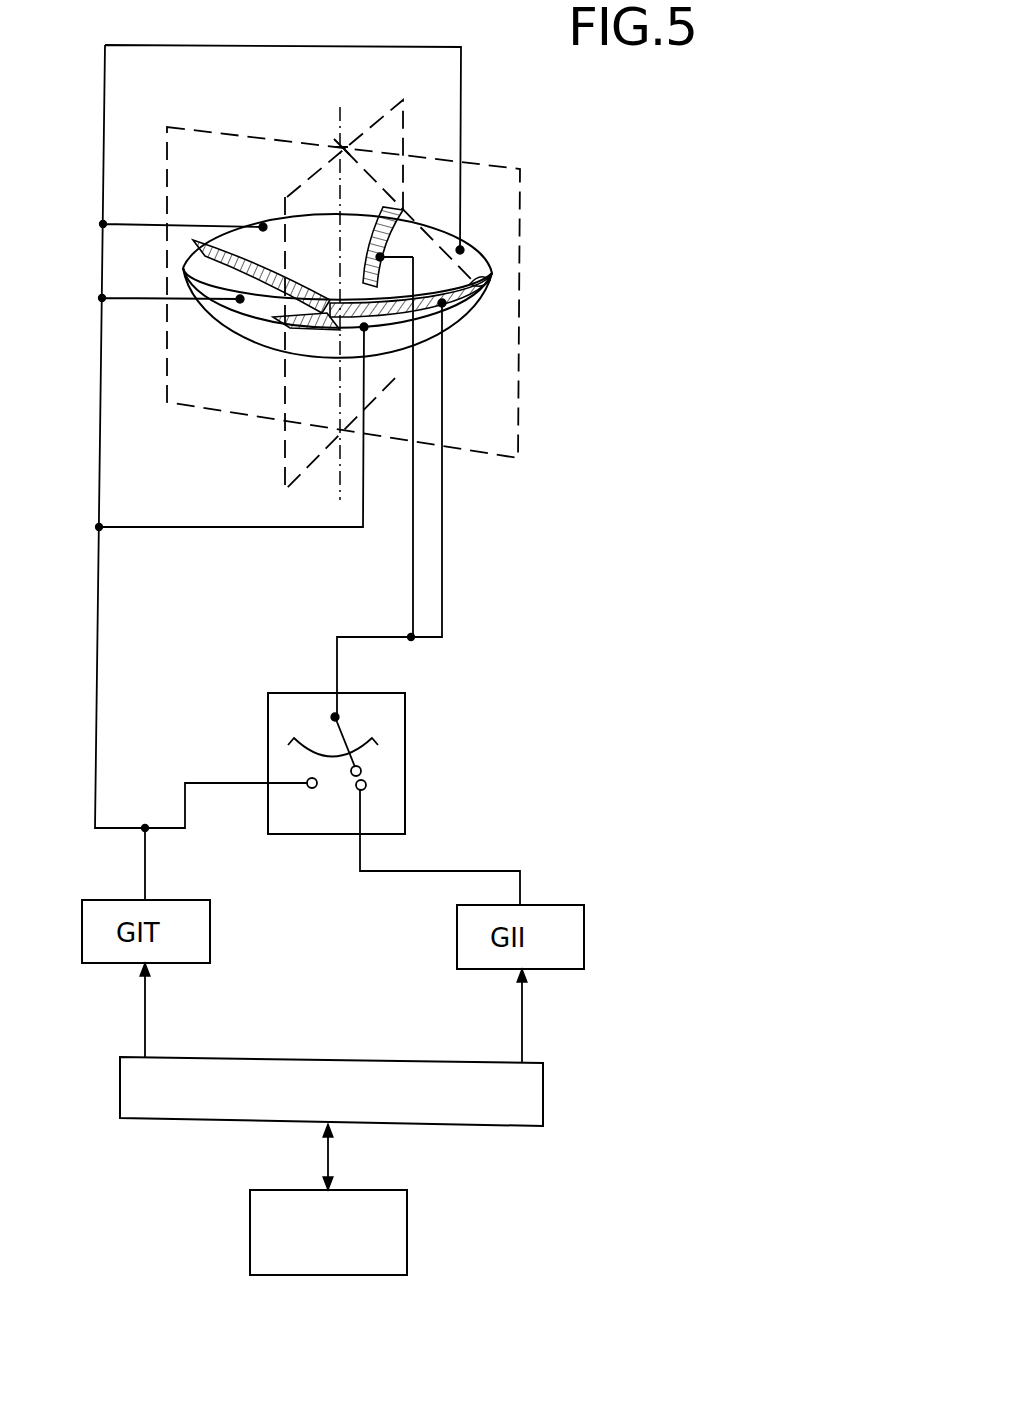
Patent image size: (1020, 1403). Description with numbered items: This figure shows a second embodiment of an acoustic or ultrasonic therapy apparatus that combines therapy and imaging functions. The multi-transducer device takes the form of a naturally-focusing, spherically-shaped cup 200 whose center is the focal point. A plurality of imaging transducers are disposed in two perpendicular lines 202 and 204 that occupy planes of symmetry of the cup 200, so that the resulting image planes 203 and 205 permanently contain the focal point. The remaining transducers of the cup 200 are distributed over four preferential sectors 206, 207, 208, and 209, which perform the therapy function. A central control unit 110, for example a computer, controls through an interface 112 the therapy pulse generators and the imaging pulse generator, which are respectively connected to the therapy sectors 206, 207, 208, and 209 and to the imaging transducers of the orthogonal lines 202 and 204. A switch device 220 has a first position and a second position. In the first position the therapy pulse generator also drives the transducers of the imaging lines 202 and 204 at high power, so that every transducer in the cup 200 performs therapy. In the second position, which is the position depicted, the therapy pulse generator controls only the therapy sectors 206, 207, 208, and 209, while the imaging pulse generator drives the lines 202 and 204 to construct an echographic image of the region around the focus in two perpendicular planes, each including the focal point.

The cup 200 is at (478, 238).
The imaging transducer line 202 is at (405, 220).
The image plane 203 is at (398, 114).
The imaging transducer line 204 is at (492, 278).
The image plane 205 is at (502, 372).
The therapy transducer sector 206 is at (390, 328).
The therapy transducer sector 207 is at (474, 261).
The therapy transducer sector 208 is at (276, 217).
The therapy transducer sector 209 is at (247, 312).
The switch device 220 is at (413, 762).
The interface 112 is at (222, 1110).
The central control unit 110 is at (405, 1212).